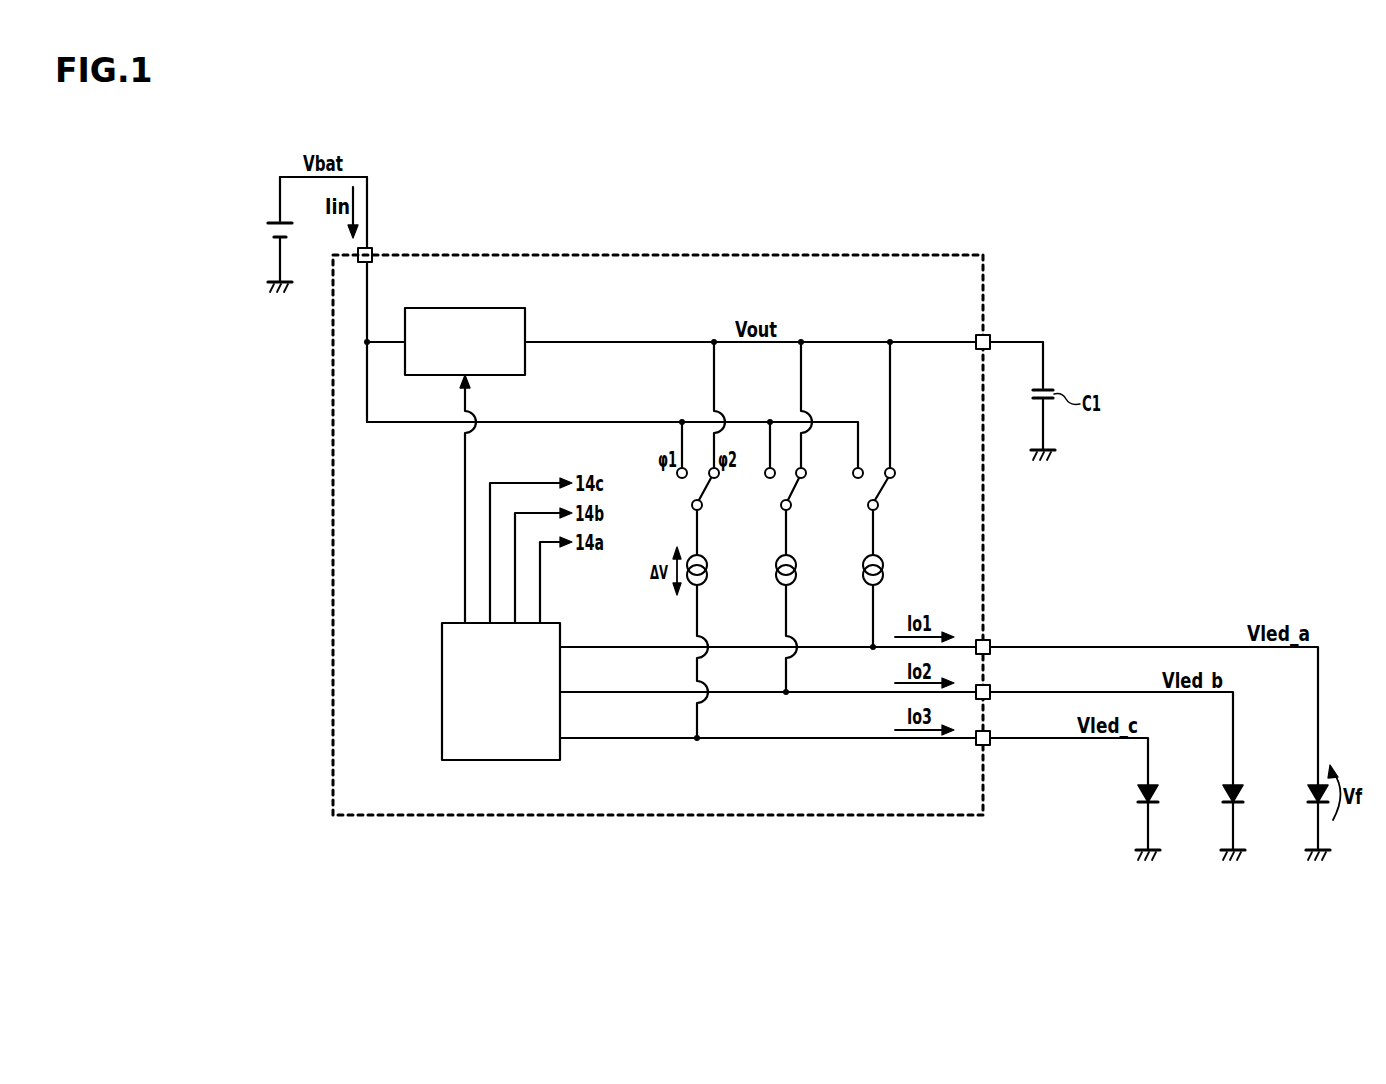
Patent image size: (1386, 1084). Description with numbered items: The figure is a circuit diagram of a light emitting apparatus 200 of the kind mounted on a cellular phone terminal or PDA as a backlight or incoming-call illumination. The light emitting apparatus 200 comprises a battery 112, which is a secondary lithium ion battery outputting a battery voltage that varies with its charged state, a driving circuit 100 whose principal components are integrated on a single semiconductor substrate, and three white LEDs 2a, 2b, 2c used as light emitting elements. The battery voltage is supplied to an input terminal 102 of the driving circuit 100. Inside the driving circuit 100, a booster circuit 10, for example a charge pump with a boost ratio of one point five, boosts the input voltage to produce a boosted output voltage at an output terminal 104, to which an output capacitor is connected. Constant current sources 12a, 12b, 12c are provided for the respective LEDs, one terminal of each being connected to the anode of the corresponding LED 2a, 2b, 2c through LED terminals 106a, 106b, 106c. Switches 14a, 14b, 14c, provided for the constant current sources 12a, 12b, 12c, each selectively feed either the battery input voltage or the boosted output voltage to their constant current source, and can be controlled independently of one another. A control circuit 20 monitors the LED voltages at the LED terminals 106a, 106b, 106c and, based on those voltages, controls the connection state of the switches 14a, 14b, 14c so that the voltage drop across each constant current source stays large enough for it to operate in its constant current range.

The battery 112 is at (270, 232).
The input terminal 102 is at (372, 249).
The driving circuit 100 is at (657, 816).
The booster circuit 10 is at (470, 308).
The control circuit 20 is at (502, 760).
The switch 14a is at (865, 491).
The switch 14b is at (776, 491).
The switch 14c is at (688, 491).
The constant current source 12a is at (884, 568).
The constant current source 12b is at (797, 568).
The constant current source 12c is at (708, 568).
The output terminal 104 is at (990, 336).
The LED terminal 106a is at (990, 641).
The LED terminal 106b is at (990, 686).
The LED terminal 106c is at (990, 732).
The LED 2a is at (1306, 790).
The LED 2b is at (1221, 790).
The LED 2c is at (1136, 790).
The light emitting apparatus 200 is at (805, 952).